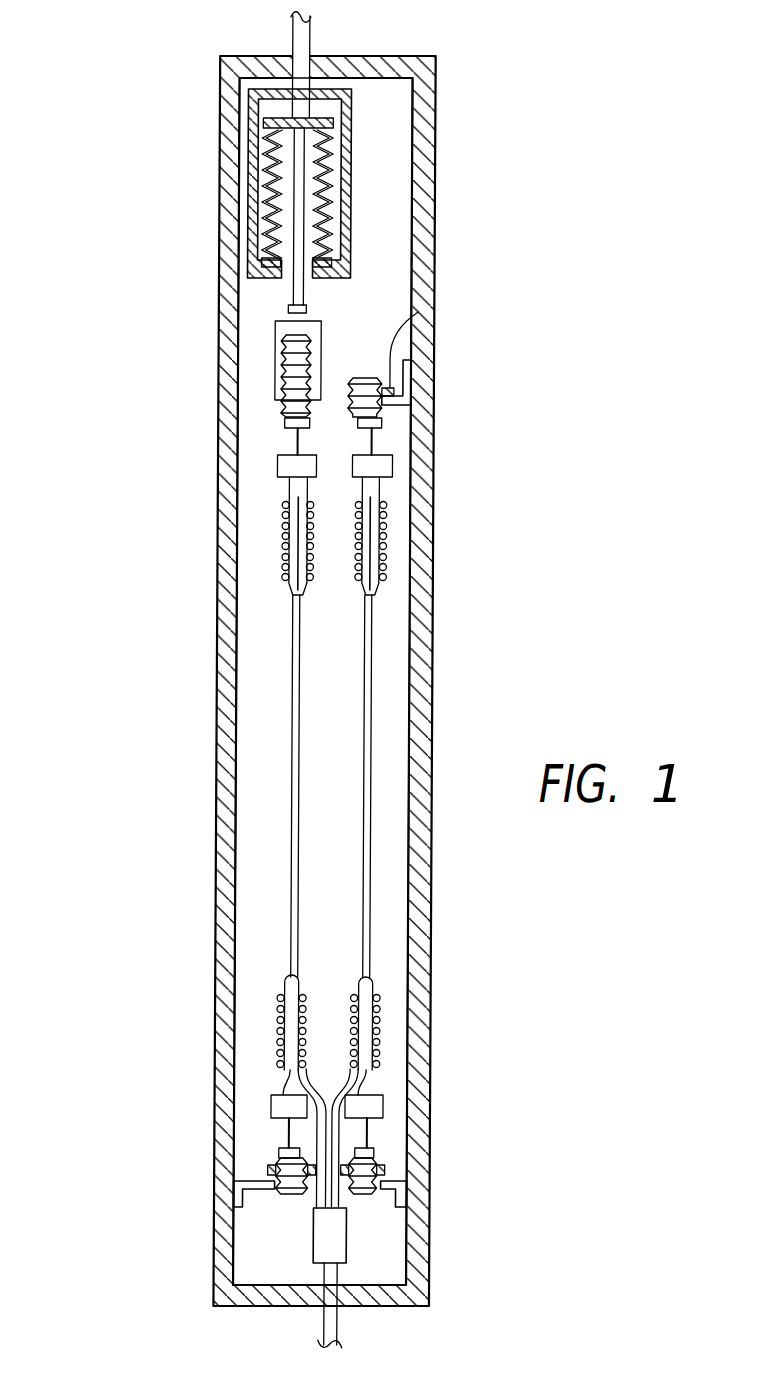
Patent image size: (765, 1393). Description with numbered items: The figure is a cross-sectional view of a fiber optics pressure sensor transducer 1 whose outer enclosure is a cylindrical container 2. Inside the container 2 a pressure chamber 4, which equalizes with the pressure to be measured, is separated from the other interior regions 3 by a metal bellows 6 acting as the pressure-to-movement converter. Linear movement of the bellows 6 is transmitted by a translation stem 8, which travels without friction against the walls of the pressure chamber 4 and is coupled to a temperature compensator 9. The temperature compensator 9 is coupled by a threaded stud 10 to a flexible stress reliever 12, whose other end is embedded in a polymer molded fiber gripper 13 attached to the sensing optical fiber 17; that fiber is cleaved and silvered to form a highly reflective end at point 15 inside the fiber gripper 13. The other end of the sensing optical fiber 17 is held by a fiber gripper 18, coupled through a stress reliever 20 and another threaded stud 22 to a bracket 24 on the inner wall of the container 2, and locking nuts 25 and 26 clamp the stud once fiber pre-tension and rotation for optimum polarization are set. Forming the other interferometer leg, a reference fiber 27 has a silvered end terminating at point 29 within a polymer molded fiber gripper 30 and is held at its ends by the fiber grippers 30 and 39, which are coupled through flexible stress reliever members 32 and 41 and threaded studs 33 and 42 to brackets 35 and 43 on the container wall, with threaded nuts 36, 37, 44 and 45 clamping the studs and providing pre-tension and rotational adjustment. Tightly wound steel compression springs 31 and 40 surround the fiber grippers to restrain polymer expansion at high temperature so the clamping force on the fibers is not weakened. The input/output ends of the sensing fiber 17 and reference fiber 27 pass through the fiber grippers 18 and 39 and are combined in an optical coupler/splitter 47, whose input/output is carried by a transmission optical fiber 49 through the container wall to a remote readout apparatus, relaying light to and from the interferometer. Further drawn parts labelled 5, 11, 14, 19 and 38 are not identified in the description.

The pressure sensor transducer 1 is at (303, 674).
The container 2 is at (440, 643).
The interior regions 3 is at (387, 673).
The pressure chamber 4 is at (353, 143).
The actuating rod 5 is at (304, 33).
The bellows 6 is at (329, 208).
The translation stem 8 is at (296, 289).
The temperature compensator 9 is at (279, 332).
The threaded stud 10 is at (286, 413).
The threaded insulator 11 is at (284, 403).
The flexible stress reliever 12 is at (293, 440).
The fiber gripper 13 is at (283, 468).
The coil spring 14 is at (290, 560).
The reflective end point 15 is at (289, 497).
The sensing optical fiber 17 is at (298, 807).
The fiber gripper 18 is at (278, 1098).
The coil spring 19 is at (280, 1008).
The stress reliever 20 is at (294, 1132).
The threaded stud 22 is at (288, 1160).
The bracket 24 is at (247, 1190).
The locking nut 25 is at (281, 1172).
The locking nut 26 is at (282, 1183).
The reference fiber 27 is at (376, 715).
The silvered end point 29 is at (385, 508).
The fiber gripper 30 is at (394, 465).
The compression spring 31 is at (386, 543).
The flexible stress reliever member 32 is at (376, 443).
The threaded stud 33 is at (376, 432).
The bracket 35 is at (414, 385).
The threaded nut 36 is at (396, 408).
The threaded nut 37 is at (420, 312).
The contact tube 38 is at (378, 990).
The fiber gripper 39 is at (376, 1102).
The compression spring 40 is at (380, 1017).
The flexible stress reliever member 41 is at (389, 1115).
The threaded stud 42 is at (380, 1152).
The bracket 43 is at (404, 1187).
The threaded nut 44 is at (390, 1167).
The threaded nut 45 is at (385, 1192).
The optical coupler/splitter 47 is at (342, 1238).
The transmission optical fiber 49 is at (345, 1322).